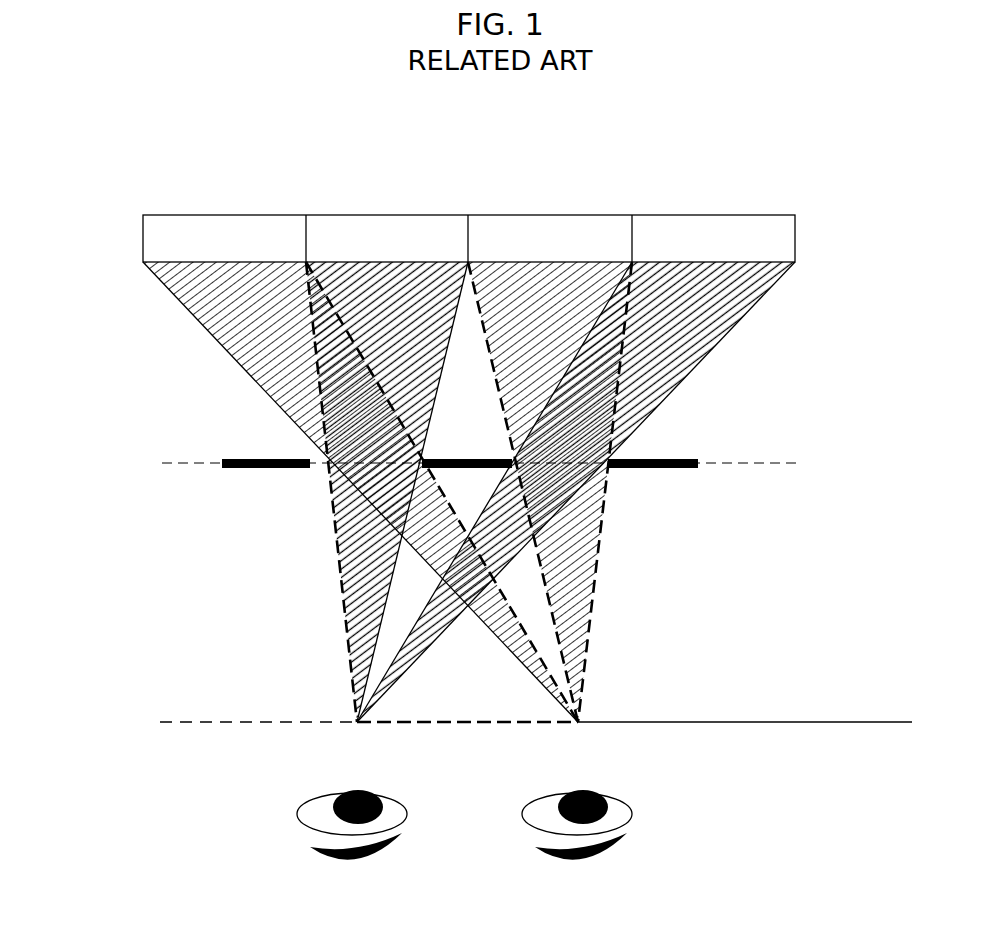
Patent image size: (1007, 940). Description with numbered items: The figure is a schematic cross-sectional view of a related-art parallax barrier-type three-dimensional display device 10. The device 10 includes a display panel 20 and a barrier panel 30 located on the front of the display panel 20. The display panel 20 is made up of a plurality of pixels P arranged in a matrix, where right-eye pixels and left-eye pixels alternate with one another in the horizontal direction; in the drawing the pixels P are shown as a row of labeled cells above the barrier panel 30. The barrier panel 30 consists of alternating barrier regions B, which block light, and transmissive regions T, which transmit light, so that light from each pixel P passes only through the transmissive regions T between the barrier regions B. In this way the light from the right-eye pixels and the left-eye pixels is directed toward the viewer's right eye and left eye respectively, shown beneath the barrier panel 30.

The 3D display device 10 is at (487, 119).
The display panel 20 is at (814, 233).
The barrier panel 30 is at (718, 456).
The pixel P is at (750, 216).
The barrier region B is at (228, 470).
The transmissive region T is at (362, 476).